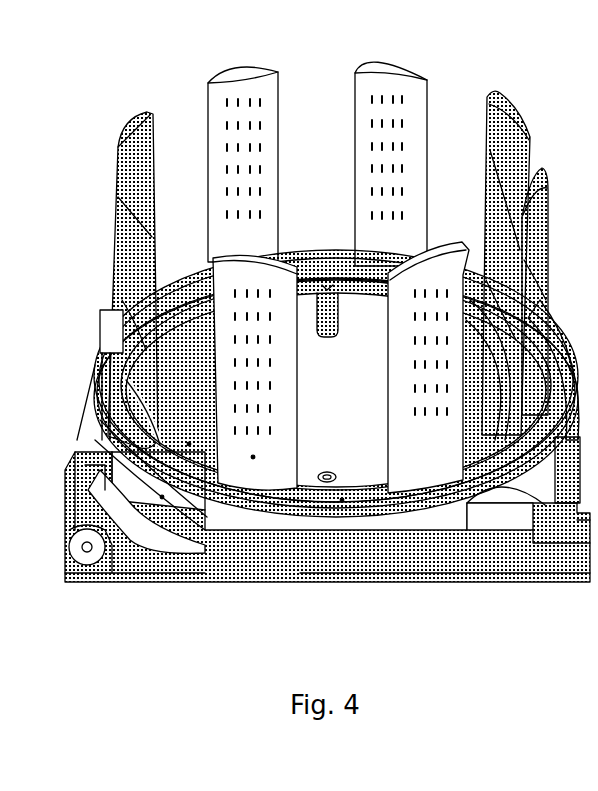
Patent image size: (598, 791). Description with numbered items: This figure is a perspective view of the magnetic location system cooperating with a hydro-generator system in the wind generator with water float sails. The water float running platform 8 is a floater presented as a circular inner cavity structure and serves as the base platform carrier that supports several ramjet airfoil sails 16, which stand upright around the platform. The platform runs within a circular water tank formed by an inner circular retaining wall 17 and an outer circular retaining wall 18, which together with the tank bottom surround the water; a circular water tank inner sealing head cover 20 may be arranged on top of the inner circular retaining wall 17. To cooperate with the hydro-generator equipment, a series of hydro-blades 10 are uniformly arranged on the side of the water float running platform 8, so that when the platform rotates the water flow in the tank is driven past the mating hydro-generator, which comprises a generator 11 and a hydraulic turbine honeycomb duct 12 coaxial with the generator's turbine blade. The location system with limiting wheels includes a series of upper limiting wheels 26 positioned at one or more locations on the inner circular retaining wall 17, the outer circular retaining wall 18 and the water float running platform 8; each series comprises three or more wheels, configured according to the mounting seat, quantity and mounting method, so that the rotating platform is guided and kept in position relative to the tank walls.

The water float running platform 8 is at (342, 500).
The hydro-blades 10 is at (95, 368).
The generator 11 is at (80, 529).
The hydraulic turbine honeycomb duct 12 is at (155, 535).
The ramjet airfoil sails 16 is at (253, 457).
The inner circular retaining wall 17 is at (189, 444).
The outer circular retaining wall 18 is at (163, 498).
The circular water tank inner sealing head cover 20 is at (82, 458).
The upper limiting wheels 26 is at (332, 474).